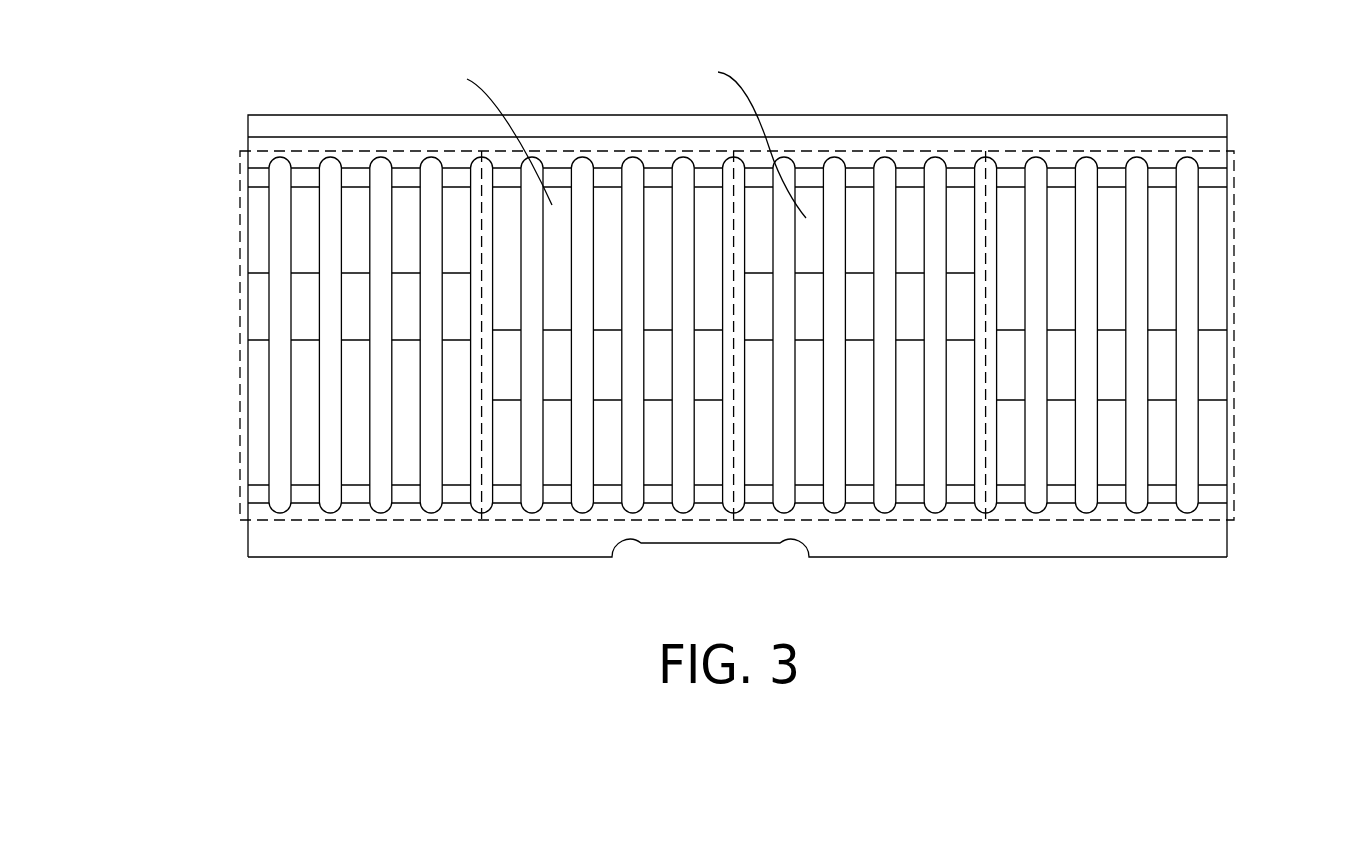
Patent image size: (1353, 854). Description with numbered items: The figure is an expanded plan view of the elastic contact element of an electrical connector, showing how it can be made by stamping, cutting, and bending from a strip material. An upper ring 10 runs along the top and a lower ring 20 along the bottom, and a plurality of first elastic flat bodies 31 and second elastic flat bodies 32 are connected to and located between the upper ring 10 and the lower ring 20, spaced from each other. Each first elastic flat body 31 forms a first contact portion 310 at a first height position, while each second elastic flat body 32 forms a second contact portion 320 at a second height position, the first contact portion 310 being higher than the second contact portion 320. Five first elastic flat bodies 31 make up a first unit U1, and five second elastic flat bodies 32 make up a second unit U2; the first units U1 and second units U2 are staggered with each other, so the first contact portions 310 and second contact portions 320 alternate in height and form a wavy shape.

The upper ring 10 is at (840, 126).
The lower ring 20 is at (992, 541).
The first elastic flat body 31 is at (260, 220).
The second elastic flat body 32 is at (1167, 238).
The first contact portion 310 is at (258, 306).
The second contact portion 320 is at (1162, 366).
The first unit U1 is at (380, 152).
The second unit U2 is at (620, 155).